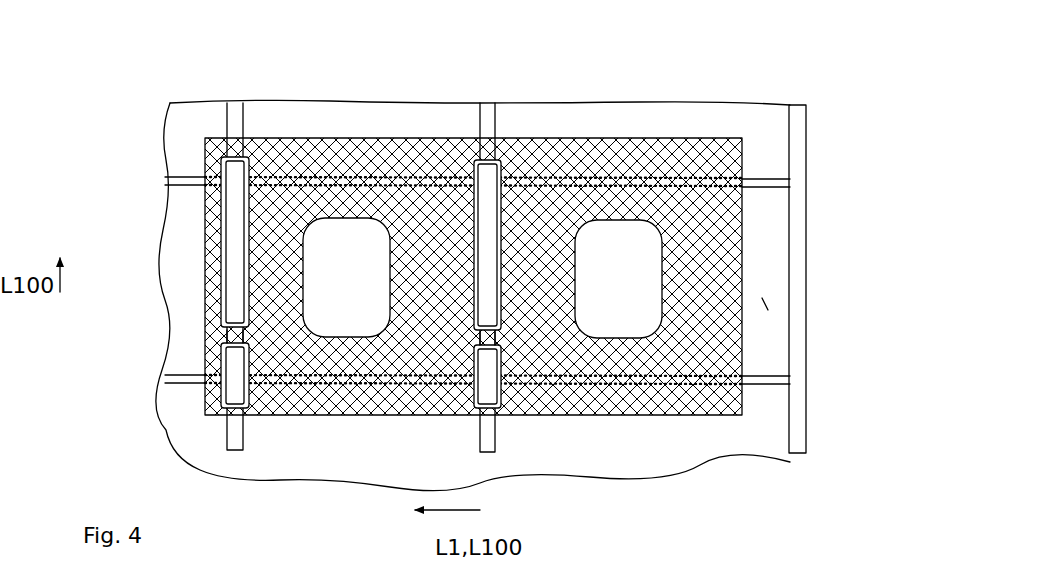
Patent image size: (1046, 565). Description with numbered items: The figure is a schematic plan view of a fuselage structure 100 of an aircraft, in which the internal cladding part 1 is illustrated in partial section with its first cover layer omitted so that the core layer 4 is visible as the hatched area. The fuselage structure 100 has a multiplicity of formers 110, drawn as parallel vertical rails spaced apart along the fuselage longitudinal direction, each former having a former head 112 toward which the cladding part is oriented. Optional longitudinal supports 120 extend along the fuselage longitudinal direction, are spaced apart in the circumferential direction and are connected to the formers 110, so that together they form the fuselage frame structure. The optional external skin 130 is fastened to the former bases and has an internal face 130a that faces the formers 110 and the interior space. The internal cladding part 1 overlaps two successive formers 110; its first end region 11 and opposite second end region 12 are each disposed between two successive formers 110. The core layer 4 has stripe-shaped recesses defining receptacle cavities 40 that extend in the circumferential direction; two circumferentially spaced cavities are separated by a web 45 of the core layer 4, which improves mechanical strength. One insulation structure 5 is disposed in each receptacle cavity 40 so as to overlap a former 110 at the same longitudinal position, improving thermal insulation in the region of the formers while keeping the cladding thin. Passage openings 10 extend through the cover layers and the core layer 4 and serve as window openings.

The fuselage structure 100 is at (699, 62).
The external skin 130 is at (623, 110).
The internal face 130a is at (765, 304).
The core layer 4 is at (317, 416).
The passage openings 10 is at (390, 280).
The longitudinal supports 120 is at (165, 181).
The formers 110 is at (236, 104).
The former head 112 is at (795, 238).
The receptacle cavity 40 is at (250, 158).
The web 45 is at (215, 337).
The insulation structure 5 is at (205, 258).
The first end region 11 is at (197, 403).
The second end region 12 is at (745, 397).
The internal cladding part 1 is at (703, 423).